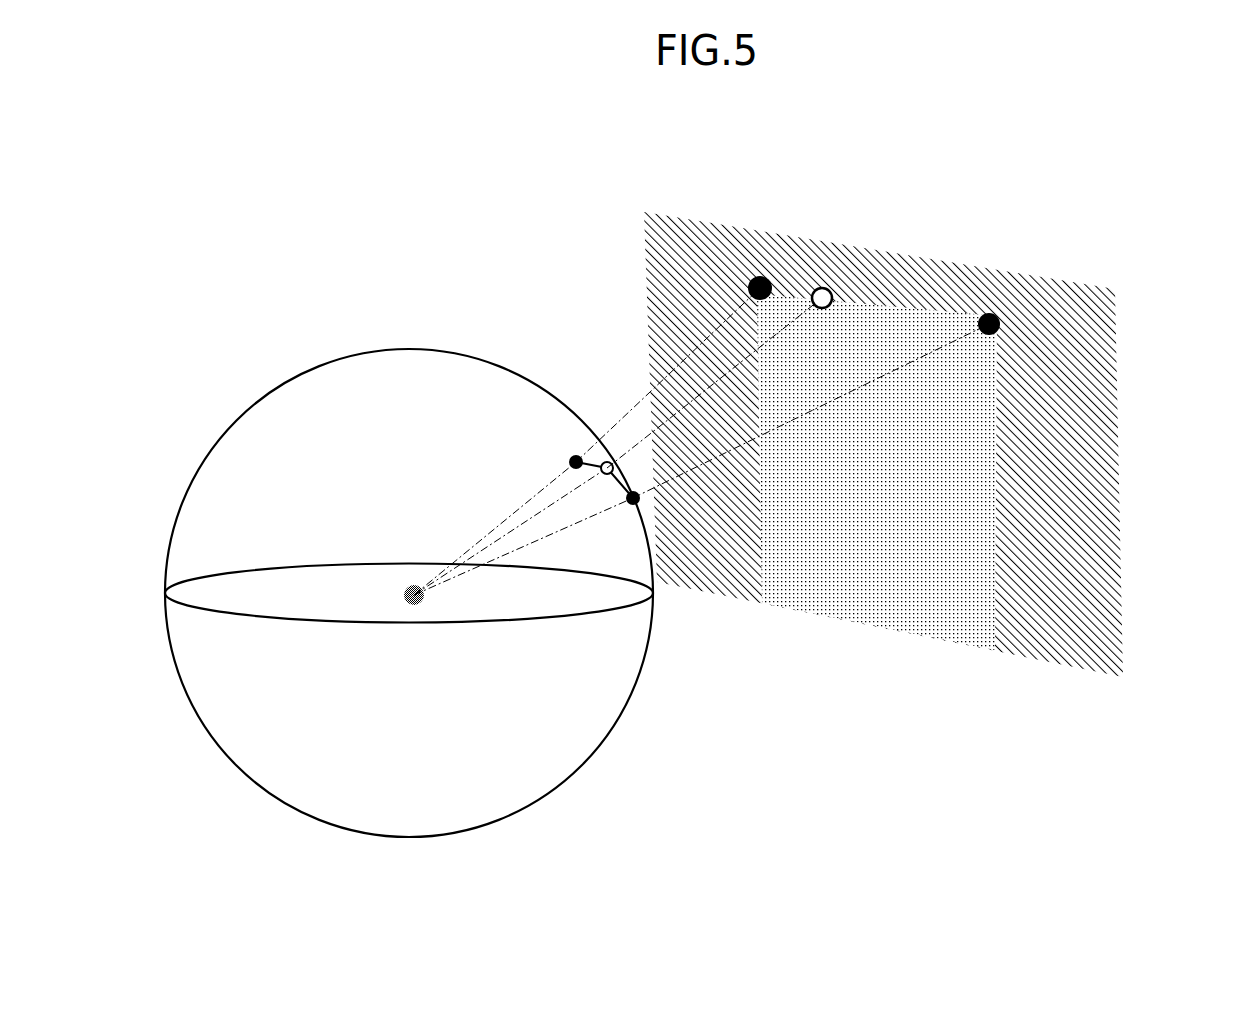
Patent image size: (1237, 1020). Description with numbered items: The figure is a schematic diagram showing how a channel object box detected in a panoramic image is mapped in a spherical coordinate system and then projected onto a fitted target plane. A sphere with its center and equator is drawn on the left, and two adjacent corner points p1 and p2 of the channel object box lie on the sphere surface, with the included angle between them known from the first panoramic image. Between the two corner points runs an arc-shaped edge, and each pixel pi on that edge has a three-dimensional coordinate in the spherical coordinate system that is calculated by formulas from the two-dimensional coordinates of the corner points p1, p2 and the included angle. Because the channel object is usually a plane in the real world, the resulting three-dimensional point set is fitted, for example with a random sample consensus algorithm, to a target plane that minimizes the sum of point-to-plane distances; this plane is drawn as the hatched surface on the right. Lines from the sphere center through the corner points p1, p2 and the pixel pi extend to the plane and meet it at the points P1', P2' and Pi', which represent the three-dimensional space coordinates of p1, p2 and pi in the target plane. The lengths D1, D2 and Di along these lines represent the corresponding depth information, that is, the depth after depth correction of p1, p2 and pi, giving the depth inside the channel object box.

The corner point p1 is at (560, 459).
The pixel on arc-shaped edge pi is at (598, 481).
The corner point p2 is at (625, 515).
The depth information D1 is at (668, 375).
The depth information Di is at (714, 383).
The depth information D2 is at (811, 411).
The three-dimensional space coordinate P1' is at (746, 239).
The three-dimensional space coordinate Pi' is at (910, 255).
The three-dimensional space coordinate P2' is at (1096, 291).